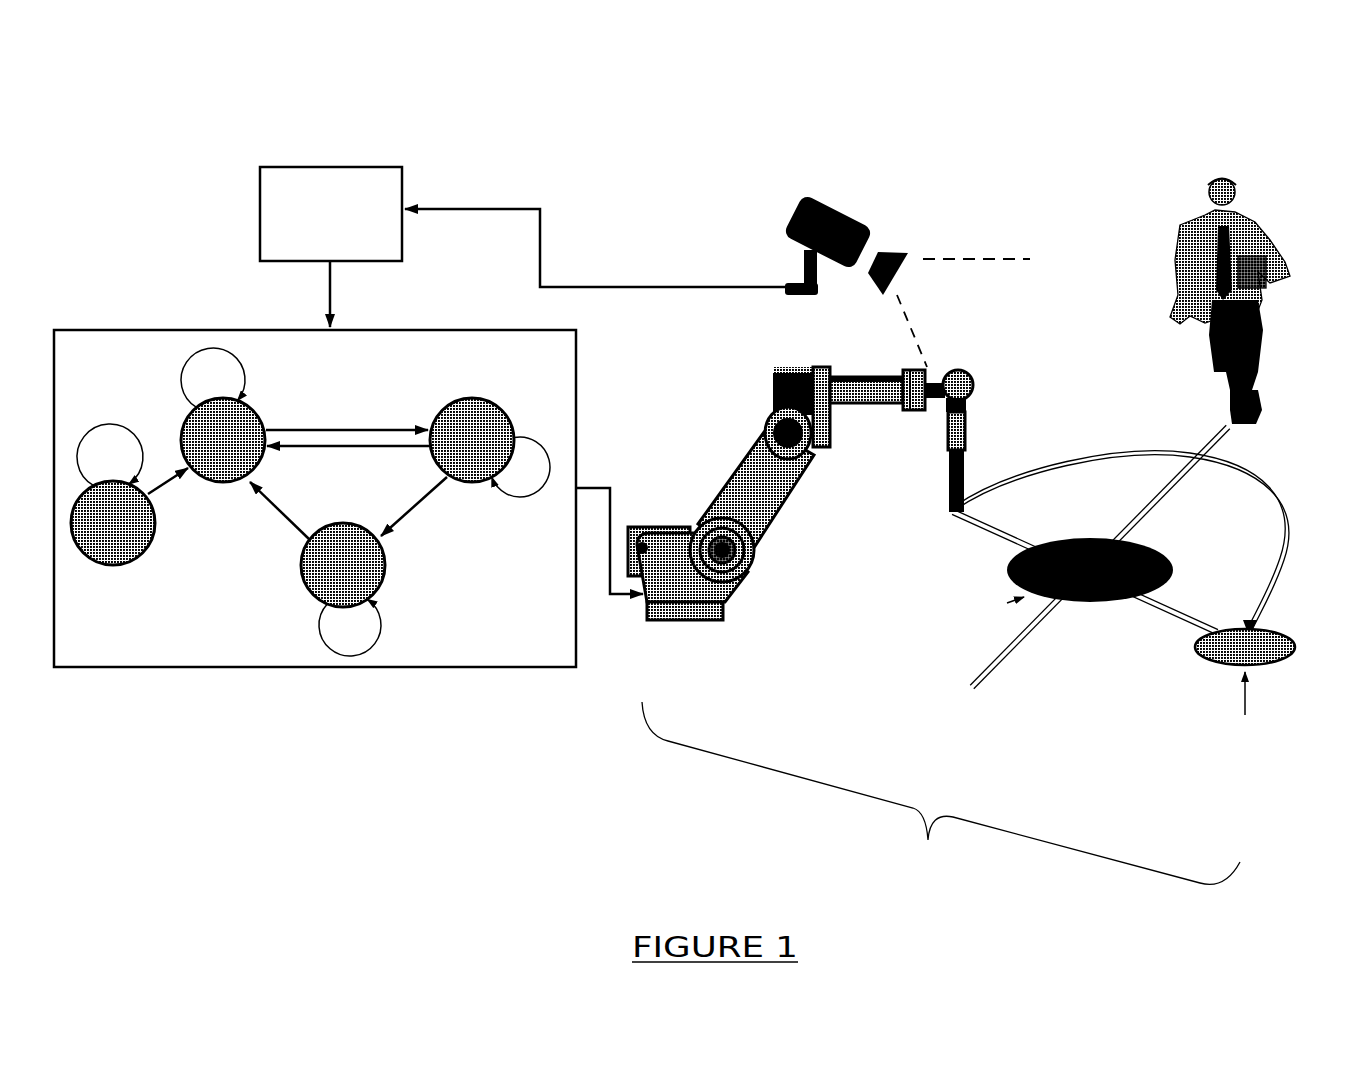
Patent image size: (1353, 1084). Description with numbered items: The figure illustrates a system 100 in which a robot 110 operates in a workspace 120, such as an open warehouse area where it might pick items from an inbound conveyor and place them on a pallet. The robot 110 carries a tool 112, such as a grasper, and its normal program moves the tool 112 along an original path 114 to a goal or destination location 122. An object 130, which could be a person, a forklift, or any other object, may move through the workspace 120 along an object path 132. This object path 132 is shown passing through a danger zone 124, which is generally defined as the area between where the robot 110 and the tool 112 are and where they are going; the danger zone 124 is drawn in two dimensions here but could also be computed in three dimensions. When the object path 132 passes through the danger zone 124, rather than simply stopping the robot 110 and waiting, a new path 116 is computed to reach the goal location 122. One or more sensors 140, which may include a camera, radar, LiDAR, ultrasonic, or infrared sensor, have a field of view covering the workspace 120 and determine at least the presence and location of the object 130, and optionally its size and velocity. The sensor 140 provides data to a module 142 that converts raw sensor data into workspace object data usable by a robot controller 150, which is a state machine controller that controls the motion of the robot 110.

The system 100 is at (908, 100).
The robot 110 is at (756, 455).
The tool 112 is at (950, 495).
The original path 114 is at (1167, 612).
The new path 116 is at (1140, 452).
The workspace 120 is at (941, 793).
The goal or destination location 122 is at (1200, 658).
The danger zone 124 is at (1003, 565).
The object 130 is at (1257, 223).
The object path 132 is at (1153, 503).
The sensor 140 is at (795, 211).
The module 142 is at (258, 217).
The robot controller 150 is at (207, 668).